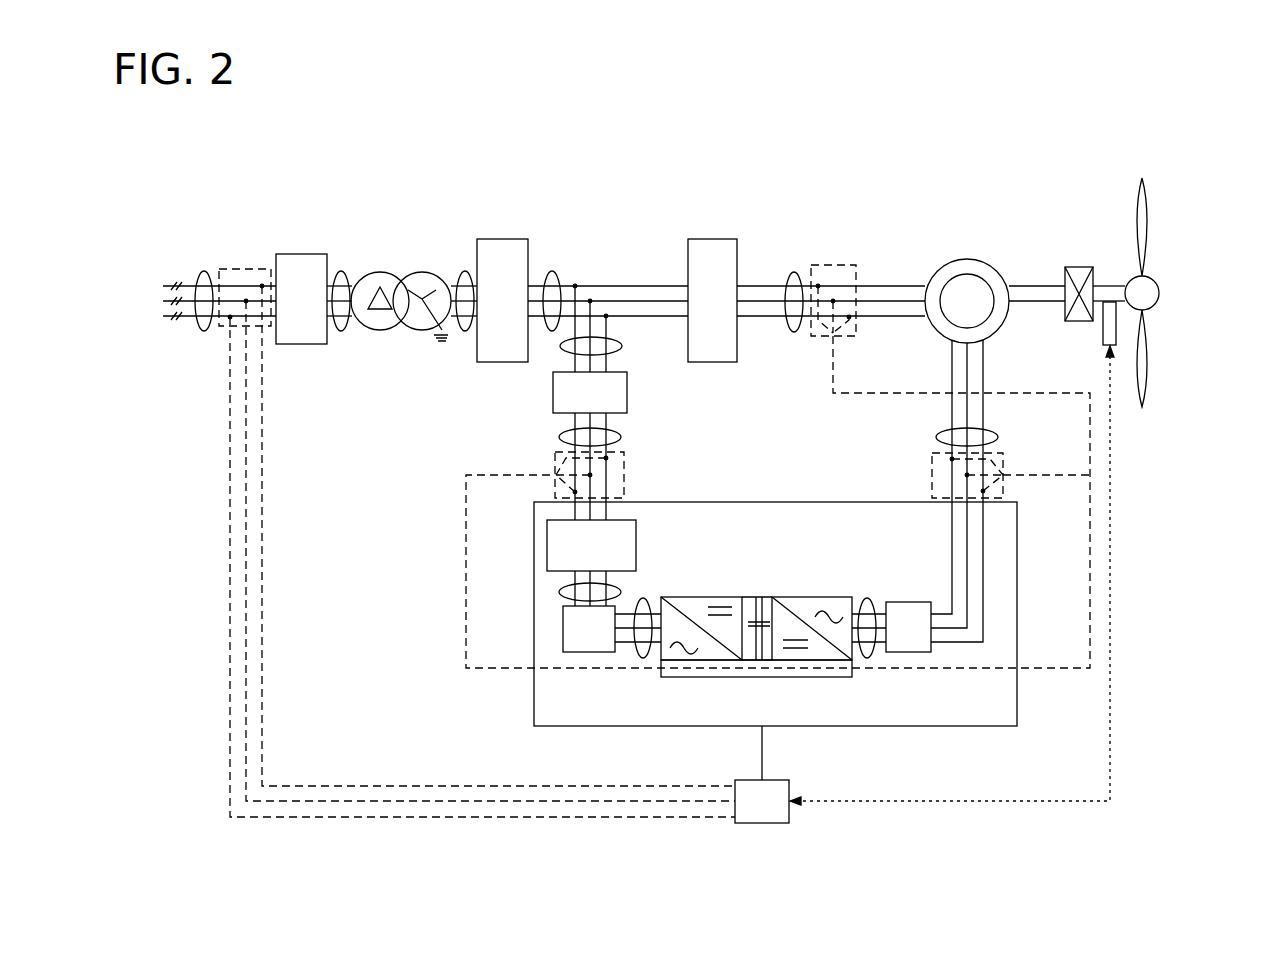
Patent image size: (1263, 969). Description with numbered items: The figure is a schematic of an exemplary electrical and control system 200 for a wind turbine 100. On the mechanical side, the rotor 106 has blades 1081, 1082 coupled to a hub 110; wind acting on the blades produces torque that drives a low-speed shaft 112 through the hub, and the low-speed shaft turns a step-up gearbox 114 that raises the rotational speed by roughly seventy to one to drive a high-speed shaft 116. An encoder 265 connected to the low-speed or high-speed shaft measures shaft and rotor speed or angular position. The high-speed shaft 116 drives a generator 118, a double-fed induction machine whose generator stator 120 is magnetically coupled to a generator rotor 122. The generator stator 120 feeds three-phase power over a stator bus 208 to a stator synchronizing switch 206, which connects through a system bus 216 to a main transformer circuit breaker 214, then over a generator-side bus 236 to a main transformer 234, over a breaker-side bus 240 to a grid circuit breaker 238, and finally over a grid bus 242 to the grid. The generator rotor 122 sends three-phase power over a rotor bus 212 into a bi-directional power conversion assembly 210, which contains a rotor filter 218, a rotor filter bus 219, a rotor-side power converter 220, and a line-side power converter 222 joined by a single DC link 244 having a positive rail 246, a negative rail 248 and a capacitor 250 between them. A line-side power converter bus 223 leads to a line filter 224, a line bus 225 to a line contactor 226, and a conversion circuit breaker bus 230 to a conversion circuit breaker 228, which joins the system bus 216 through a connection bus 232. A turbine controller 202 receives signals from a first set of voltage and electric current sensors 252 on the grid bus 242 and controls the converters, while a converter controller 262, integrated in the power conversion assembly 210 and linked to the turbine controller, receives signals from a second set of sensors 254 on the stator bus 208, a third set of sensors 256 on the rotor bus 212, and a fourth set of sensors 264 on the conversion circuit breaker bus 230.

The wind turbine 100 is at (1132, 160).
The rotor 106 is at (1192, 292).
The hub 110 is at (1160, 293).
The blade 1081 is at (1153, 232).
The blade 1082 is at (1153, 363).
The low-speed shaft 112 is at (1108, 285).
The step-up gearbox 114 is at (1072, 266).
The high-speed shaft 116 is at (1038, 286).
The generator 118 is at (978, 239).
The generator stator 120 is at (968, 259).
The generator rotor 122 is at (960, 276).
The electrical and control system 200 is at (250, 146).
The turbine controller 202 is at (762, 774).
The stator synchronizing switch 206 is at (715, 238).
The stator bus 208 is at (794, 272).
The power conversion assembly 210 is at (1018, 608).
The rotor bus 212 is at (998, 437).
The main transformer circuit breaker 214 is at (500, 238).
The system bus 216 is at (553, 270).
The rotor filter 218 is at (905, 602).
The rotor filter bus 219 is at (868, 597).
The rotor-side power converter 220 is at (852, 660).
The line-side power converter 222 is at (661, 658).
The line-side power converter bus 223 is at (644, 597).
The line filter 224 is at (562, 630).
The line bus 225 is at (560, 592).
The line contactor 226 is at (546, 545).
The conversion circuit breaker 228 is at (628, 393).
The conversion circuit breaker bus 230 is at (621, 437).
The connection bus 232 is at (622, 346).
The main transformer 234 is at (418, 271).
The generator-side bus 236 is at (465, 262).
The grid circuit breaker 238 is at (292, 253).
The breaker-side bus 240 is at (341, 270).
The grid bus 242 is at (204, 268).
The DC link 244 is at (756, 613).
The positive rail 246 is at (774, 597).
The negative rail 248 is at (770, 660).
The capacitor 250 is at (748, 612).
The first set of voltage and electric current sensors 252 is at (221, 333).
The second set of voltage and electric current sensors 254 is at (848, 260).
The third set of voltage and electric current sensors 256 is at (920, 472).
The converter controller 262 is at (812, 677).
The fourth set of voltage and electric current sensors 264 is at (625, 475).
The encoder 265 is at (1102, 332).